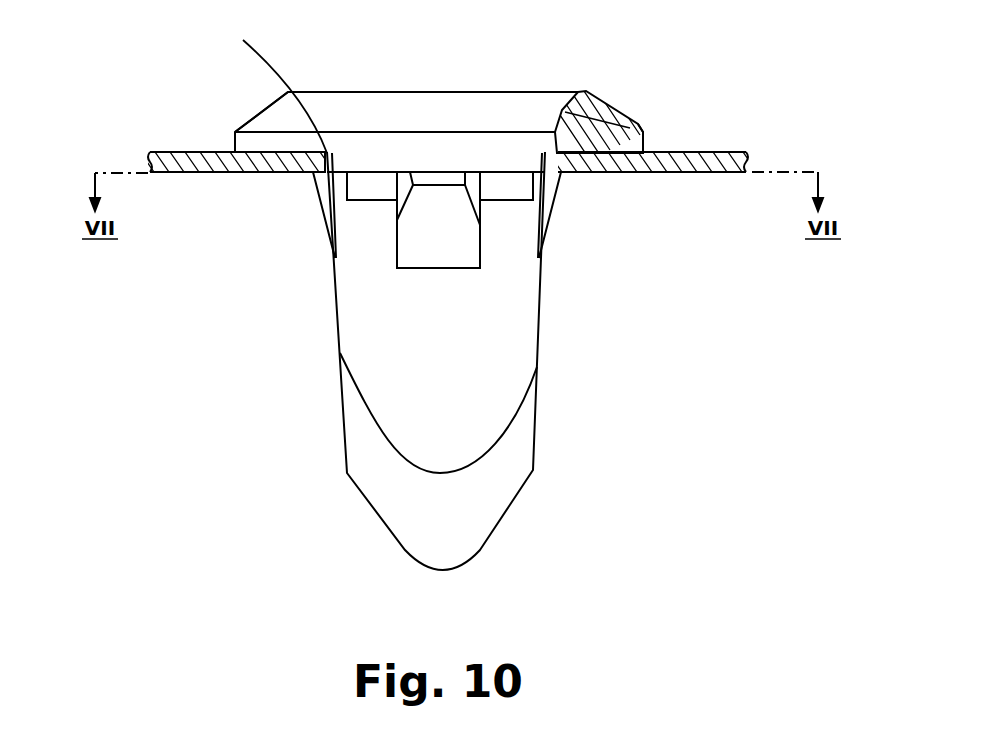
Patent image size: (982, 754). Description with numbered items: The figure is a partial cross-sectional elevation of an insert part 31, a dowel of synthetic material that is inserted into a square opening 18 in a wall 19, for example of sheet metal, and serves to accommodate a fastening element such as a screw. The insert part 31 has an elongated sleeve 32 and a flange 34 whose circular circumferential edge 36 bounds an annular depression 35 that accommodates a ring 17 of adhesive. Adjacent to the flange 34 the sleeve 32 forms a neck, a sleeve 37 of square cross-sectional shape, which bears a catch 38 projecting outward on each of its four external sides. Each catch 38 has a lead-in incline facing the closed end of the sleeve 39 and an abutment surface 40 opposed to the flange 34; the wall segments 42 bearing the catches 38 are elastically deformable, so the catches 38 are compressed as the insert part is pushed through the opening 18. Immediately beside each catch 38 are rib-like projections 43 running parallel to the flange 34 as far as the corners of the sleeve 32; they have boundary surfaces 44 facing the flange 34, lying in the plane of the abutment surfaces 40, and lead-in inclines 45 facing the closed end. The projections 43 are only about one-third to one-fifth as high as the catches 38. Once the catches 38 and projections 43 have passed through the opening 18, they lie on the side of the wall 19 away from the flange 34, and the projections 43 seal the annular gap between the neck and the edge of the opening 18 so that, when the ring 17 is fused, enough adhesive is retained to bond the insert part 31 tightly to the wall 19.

The ring of adhesive 17 is at (587, 92).
The square opening 18 is at (276, 79).
The wall 19 is at (700, 160).
The insert part 31 is at (250, 108).
The elongated sleeve 32 is at (382, 387).
The flange 34 is at (332, 107).
The annular depression 35 is at (633, 113).
The circular circumferential edge 36 is at (390, 143).
The sleeve of square cross-sectional shape 37 is at (328, 212).
The catch 38 is at (435, 178).
The closed end of the sleeve 39 is at (410, 247).
The abutment surface 40 is at (456, 176).
The wall segment 42 is at (498, 218).
The rib-like projection 43 is at (347, 186).
The boundary surface 44 is at (508, 172).
The lead-in incline 45 is at (517, 183).